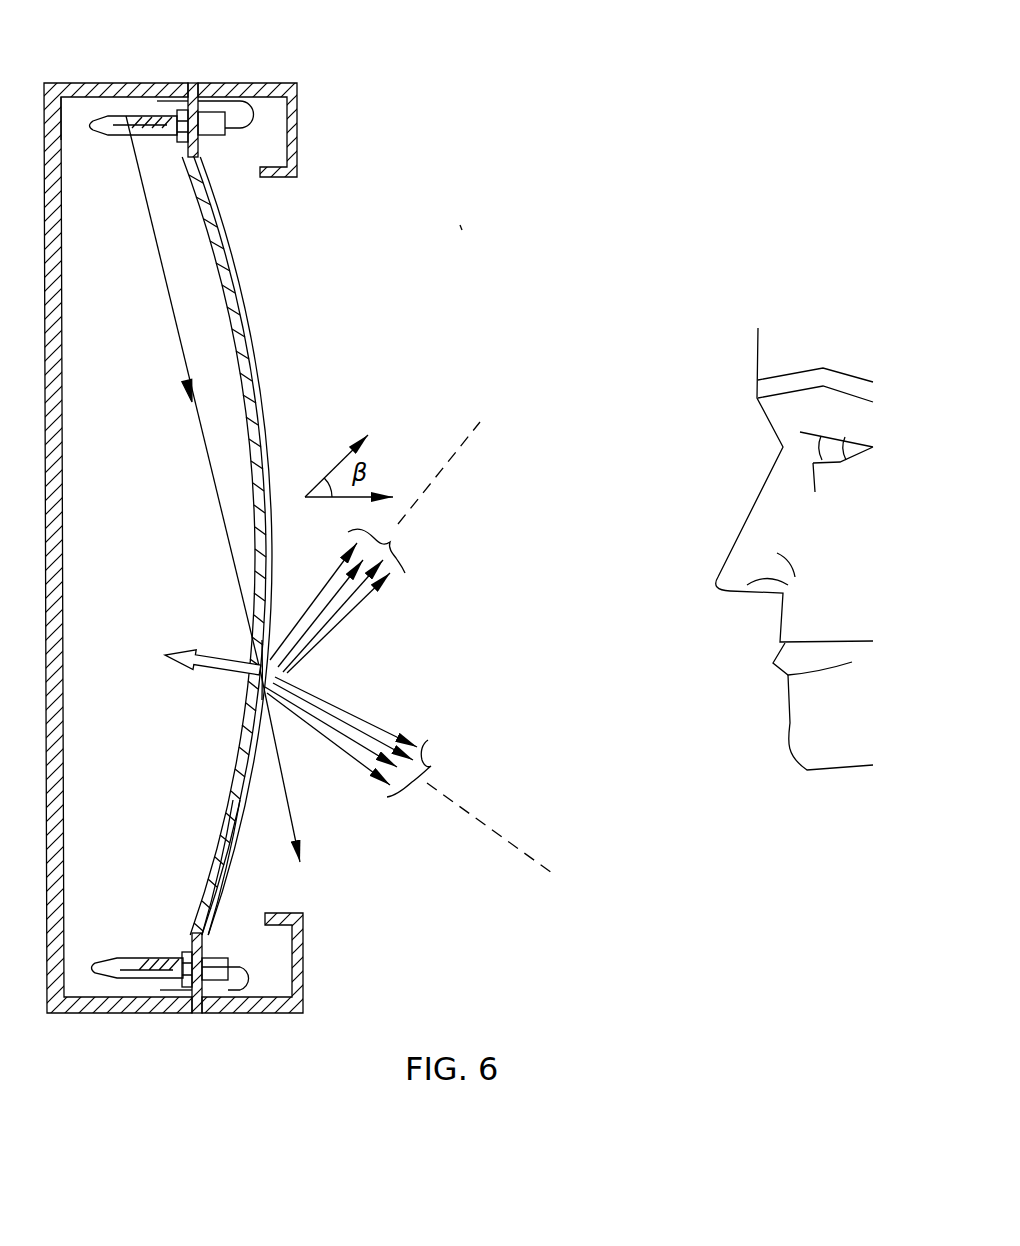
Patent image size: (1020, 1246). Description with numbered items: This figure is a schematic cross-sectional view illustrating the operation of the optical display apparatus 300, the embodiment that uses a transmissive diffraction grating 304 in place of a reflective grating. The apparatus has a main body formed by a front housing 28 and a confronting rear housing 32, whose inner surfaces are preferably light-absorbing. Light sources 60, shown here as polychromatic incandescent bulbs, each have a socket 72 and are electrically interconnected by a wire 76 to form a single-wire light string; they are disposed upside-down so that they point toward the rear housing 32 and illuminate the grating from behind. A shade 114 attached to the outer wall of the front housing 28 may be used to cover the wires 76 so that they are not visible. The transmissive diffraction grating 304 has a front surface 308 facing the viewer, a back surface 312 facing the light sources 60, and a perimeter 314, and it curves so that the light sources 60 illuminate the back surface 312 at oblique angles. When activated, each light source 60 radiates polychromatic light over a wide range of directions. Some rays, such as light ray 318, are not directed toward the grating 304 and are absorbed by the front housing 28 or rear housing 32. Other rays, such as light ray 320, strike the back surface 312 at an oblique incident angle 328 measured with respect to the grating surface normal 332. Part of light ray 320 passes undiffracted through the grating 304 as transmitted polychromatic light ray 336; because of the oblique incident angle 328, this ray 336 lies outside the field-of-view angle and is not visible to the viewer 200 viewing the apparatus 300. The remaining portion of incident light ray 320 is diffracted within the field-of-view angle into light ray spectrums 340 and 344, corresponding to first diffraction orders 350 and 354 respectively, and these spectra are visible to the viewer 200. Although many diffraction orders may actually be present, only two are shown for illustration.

The rear housing 32 is at (108, 75).
The front housing 28 is at (250, 78).
The light source 60 is at (125, 116).
The wire 76 is at (256, 108).
The socket 72 is at (212, 136).
The shade 114 is at (297, 147).
The light ray 318 is at (68, 95).
The optical display apparatus 300 is at (457, 232).
The light ray 320 is at (177, 350).
The oblique incident angle 328 is at (250, 645).
The surface normal 332 is at (212, 668).
The transmissive diffraction grating 304 is at (237, 775).
The back surface 312 is at (228, 855).
The front surface 308 is at (231, 874).
The perimeter 314 is at (203, 933).
The transmitted polychromatic light ray 336 is at (296, 835).
The light ray spectrum 344 is at (396, 556).
The light ray spectrum 340 is at (430, 762).
The first diffraction order 354 is at (442, 472).
The first diffraction order 350 is at (502, 835).
The viewer 200 is at (772, 435).